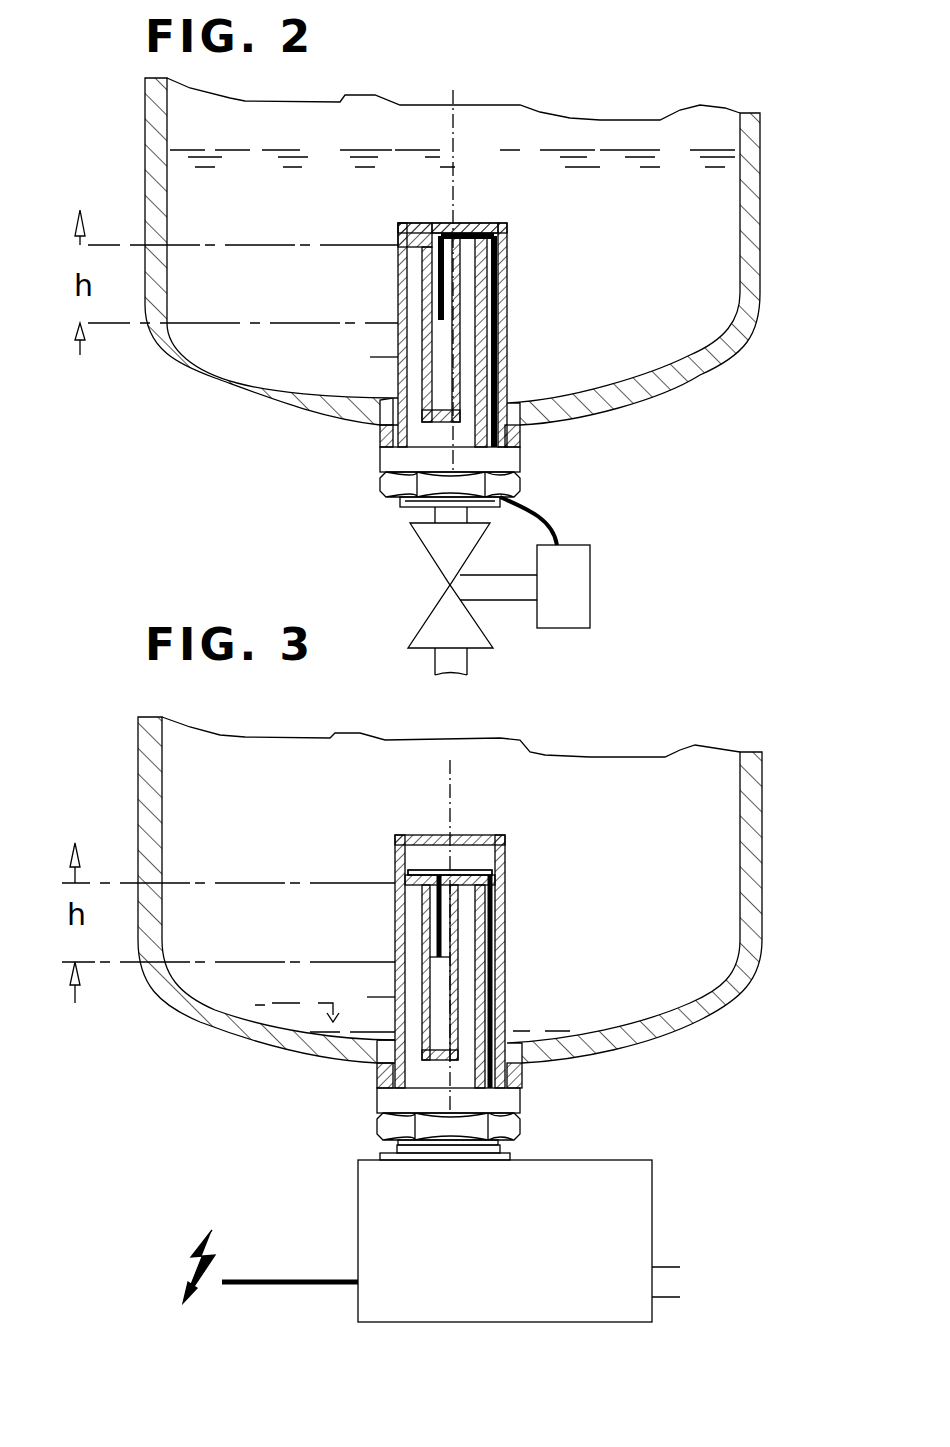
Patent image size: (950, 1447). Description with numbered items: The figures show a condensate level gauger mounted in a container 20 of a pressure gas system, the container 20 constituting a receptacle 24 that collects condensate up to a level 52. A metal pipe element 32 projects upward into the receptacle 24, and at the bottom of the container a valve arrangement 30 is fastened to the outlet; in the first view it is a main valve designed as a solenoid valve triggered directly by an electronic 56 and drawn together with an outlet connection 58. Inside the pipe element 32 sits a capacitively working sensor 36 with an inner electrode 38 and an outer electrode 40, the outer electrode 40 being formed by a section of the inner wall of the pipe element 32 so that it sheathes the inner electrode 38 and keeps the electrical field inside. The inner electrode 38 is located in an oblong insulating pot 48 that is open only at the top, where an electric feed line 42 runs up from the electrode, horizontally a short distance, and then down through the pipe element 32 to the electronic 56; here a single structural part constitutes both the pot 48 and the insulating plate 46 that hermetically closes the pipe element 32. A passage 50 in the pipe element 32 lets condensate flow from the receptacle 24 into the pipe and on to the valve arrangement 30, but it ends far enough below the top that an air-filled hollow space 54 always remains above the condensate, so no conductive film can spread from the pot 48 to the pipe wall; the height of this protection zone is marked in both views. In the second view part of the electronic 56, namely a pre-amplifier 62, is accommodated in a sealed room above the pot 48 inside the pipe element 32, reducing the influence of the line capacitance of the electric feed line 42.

In FIG. 2, the container 20 is at (145, 118).
In FIG. 3, the container 20 is at (140, 772).
In FIG. 2, the receptacle 24 is at (620, 125).
In FIG. 2, the valve arrangement 30 is at (445, 544).
In FIG. 3, the valve arrangement 30 is at (640, 1210).
In FIG. 2, the pipe element 32 is at (395, 397).
In FIG. 3, the pipe element 32 is at (395, 1035).
In FIG. 2, the sensor 36 is at (415, 431).
In FIG. 3, the sensor 36 is at (414, 1077).
In FIG. 2, the inner electrode 38 is at (440, 387).
In FIG. 3, the inner electrode 38 is at (507, 1003).
In FIG. 2, the outer electrode 40 is at (402, 322).
In FIG. 2, the electric feed line 42 is at (437, 225).
In FIG. 3, the electric feed line 42 is at (448, 938).
In FIG. 2, the plate 46 is at (418, 223).
In FIG. 3, the plate 46 is at (425, 835).
In FIG. 2, the pot 48 is at (470, 223).
In FIG. 2, the passage 50 is at (395, 405).
In FIG. 2, the level 52 is at (210, 140).
In FIG. 3, the level 52 is at (175, 1022).
In FIG. 2, the hollow space 54 is at (468, 290).
In FIG. 3, the hollow space 54 is at (465, 910).
In FIG. 2, the electronic 56 is at (585, 568).
In FIG. 3, the electronic 56 is at (470, 872).
In FIG. 2, the outlet line 58 is at (460, 663).
In FIG. 3, the outlet line 58 is at (680, 1282).
In FIG. 3, the pre-amplifier 62 is at (450, 872).